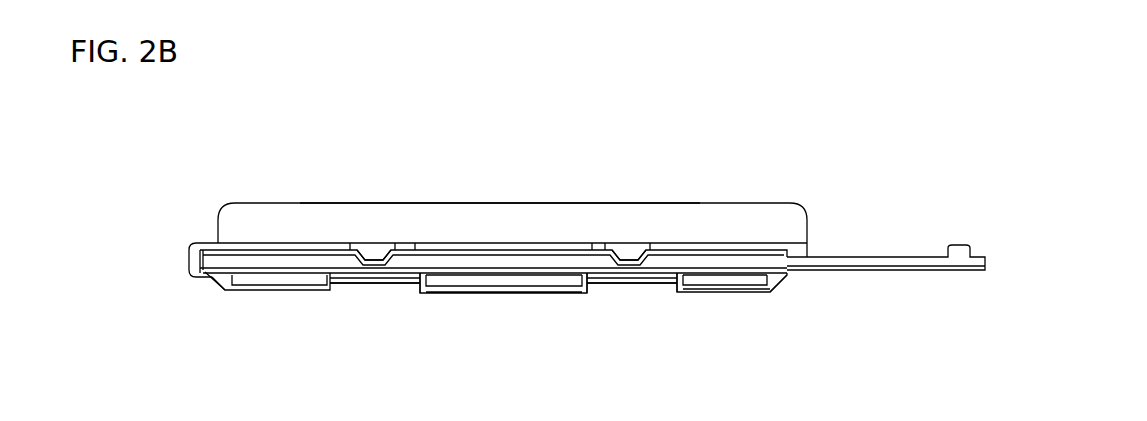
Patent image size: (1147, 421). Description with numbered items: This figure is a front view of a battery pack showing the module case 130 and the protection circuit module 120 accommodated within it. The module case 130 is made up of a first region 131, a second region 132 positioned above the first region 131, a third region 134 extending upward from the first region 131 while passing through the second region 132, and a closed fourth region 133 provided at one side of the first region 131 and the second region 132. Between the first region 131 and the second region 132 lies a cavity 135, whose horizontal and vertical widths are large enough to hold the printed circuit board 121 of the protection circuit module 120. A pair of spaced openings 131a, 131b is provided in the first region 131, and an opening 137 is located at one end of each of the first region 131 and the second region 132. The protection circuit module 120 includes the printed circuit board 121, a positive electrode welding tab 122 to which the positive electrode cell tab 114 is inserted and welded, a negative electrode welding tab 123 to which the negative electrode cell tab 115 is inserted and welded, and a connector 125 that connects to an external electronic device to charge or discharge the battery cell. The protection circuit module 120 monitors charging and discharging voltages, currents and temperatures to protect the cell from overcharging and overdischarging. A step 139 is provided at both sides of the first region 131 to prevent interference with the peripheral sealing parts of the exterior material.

The positive electrode cell tab 114 is at (673, 281).
The negative electrode cell tab 115 is at (345, 278).
The protection circuit module 120 is at (742, 252).
The printed circuit board 121 is at (757, 293).
The positive electrode welding tab 122 is at (387, 274).
The negative electrode welding tab 123 is at (642, 286).
The connector 125 is at (912, 256).
The module case 130 is at (812, 215).
The first region 131 is at (467, 294).
The opening 131a is at (400, 286).
The opening 131b is at (658, 288).
The second region 132 is at (685, 243).
The fourth region 133 is at (188, 262).
The third region 134 is at (487, 203).
The cavity 135 is at (210, 243).
The opening 137 is at (810, 273).
The step 139 is at (215, 278).